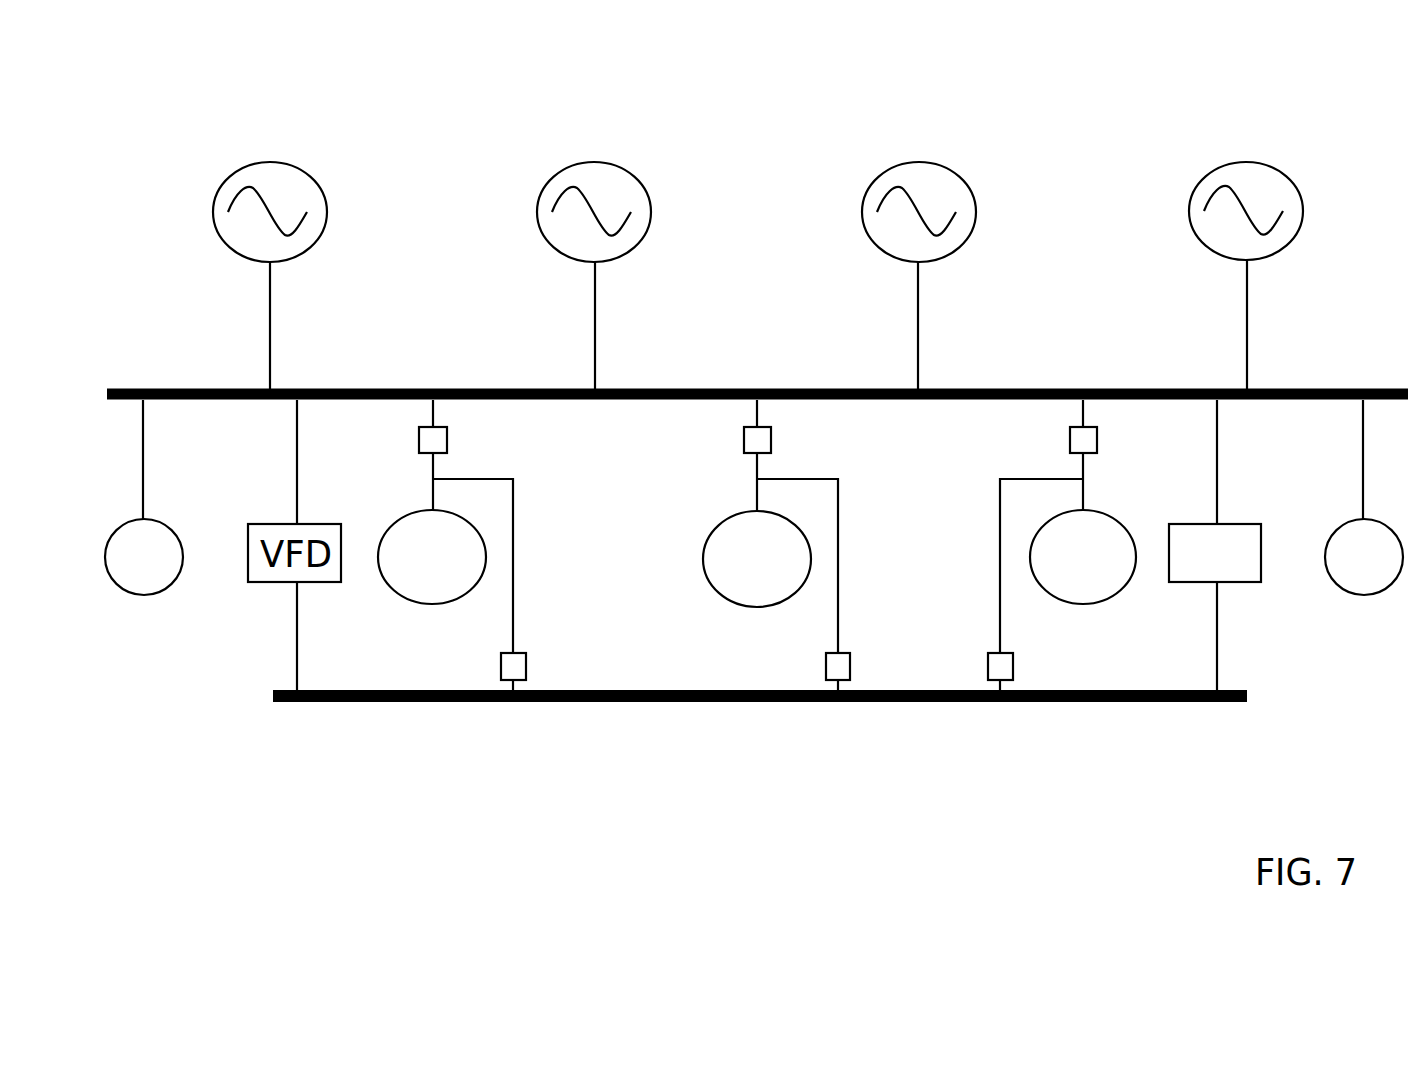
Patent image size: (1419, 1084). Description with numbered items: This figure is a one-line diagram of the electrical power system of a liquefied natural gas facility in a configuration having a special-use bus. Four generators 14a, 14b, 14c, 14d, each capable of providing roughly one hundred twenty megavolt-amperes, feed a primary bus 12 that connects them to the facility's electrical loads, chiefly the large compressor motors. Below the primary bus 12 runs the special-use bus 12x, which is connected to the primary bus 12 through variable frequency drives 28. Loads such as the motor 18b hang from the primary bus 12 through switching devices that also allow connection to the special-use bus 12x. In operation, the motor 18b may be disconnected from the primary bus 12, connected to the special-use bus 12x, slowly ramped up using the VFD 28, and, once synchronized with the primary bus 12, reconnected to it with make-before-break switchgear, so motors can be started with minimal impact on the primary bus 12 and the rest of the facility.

The primary bus 12 is at (393, 388).
The special-use bus 12x is at (347, 703).
The generator 14a is at (227, 192).
The generator 14b is at (560, 200).
The generator 14c is at (892, 203).
The generator 14d is at (1213, 202).
The motor 18b is at (742, 552).
The variable frequency drive 28 is at (1247, 572).